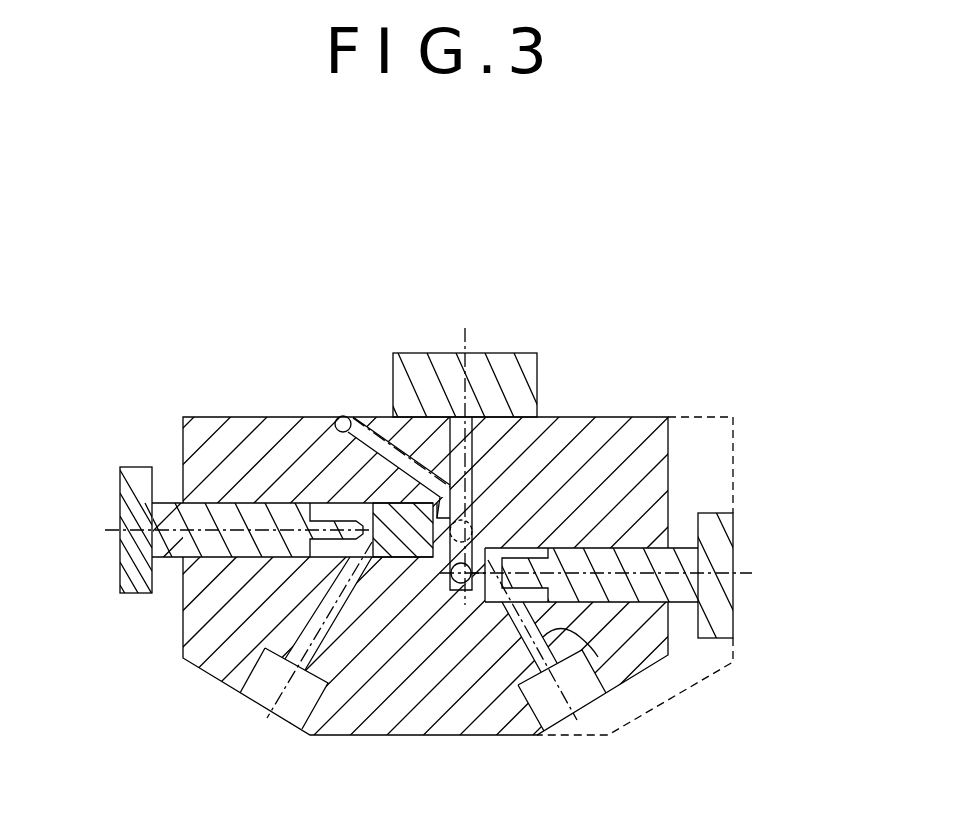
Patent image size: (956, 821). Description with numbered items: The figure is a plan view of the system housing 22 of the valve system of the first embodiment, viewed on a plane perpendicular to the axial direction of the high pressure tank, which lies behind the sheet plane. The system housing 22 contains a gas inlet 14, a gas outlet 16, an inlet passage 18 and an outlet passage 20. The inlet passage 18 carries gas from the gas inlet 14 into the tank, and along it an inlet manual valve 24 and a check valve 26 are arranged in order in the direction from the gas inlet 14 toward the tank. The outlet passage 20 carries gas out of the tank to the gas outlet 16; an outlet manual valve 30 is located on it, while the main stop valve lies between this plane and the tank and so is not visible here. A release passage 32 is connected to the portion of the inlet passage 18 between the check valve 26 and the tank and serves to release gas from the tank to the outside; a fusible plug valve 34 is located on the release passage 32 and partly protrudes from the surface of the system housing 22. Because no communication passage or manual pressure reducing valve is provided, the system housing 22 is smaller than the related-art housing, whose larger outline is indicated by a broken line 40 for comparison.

The gas inlet 14 is at (255, 706).
The gas outlet 16 is at (585, 710).
The inlet passage 18 is at (337, 427).
The outlet passage 20 is at (628, 677).
The system housing 22 is at (630, 417).
The inlet manual valve 24 is at (120, 517).
The check valve 26 is at (393, 510).
The outlet manual valve 30 is at (733, 563).
The release passage 32 is at (334, 423).
The fusible plug valve 34 is at (497, 352).
The broken line 40 is at (733, 456).